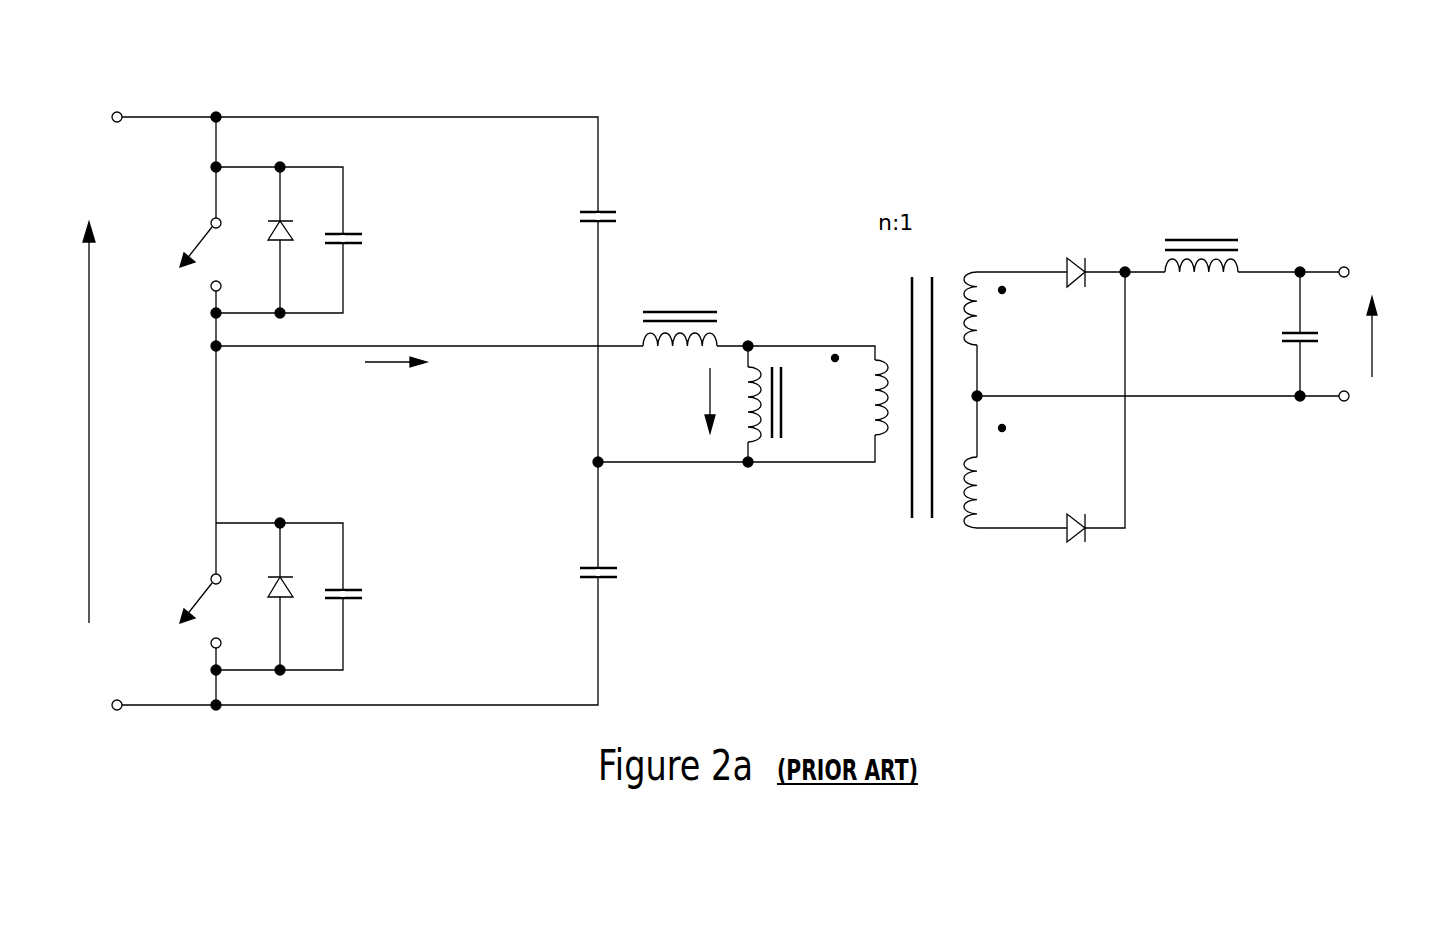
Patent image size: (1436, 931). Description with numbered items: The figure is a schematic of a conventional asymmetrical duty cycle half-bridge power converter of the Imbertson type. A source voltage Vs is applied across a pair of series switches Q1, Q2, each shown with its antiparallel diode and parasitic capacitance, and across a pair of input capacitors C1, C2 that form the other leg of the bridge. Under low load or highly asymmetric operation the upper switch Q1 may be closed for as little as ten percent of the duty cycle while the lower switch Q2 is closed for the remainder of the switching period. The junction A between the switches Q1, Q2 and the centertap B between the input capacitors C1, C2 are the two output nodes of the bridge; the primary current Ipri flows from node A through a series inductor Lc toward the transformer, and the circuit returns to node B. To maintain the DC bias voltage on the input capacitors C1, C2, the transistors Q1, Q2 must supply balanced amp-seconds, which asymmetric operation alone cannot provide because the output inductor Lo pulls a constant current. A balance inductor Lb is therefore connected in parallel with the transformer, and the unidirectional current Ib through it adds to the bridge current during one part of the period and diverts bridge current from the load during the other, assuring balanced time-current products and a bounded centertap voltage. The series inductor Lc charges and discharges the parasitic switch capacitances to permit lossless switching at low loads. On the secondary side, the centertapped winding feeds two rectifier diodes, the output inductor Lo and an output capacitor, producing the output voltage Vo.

The switch Q1 is at (262, 240).
The switch Q2 is at (263, 596).
The input capacitor C1 is at (583, 220).
The input capacitor C2 is at (586, 576).
The series inductor Lc is at (680, 315).
The balance inductor Lb is at (818, 404).
The output inductor Lo is at (1201, 240).
The source voltage Vs is at (105, 422).
The output voltage Vo is at (1394, 337).
The primary current Ipri is at (396, 380).
The balance inductor current Ib is at (691, 400).
The switch node A is at (230, 369).
The capacitor centertap node B is at (584, 467).